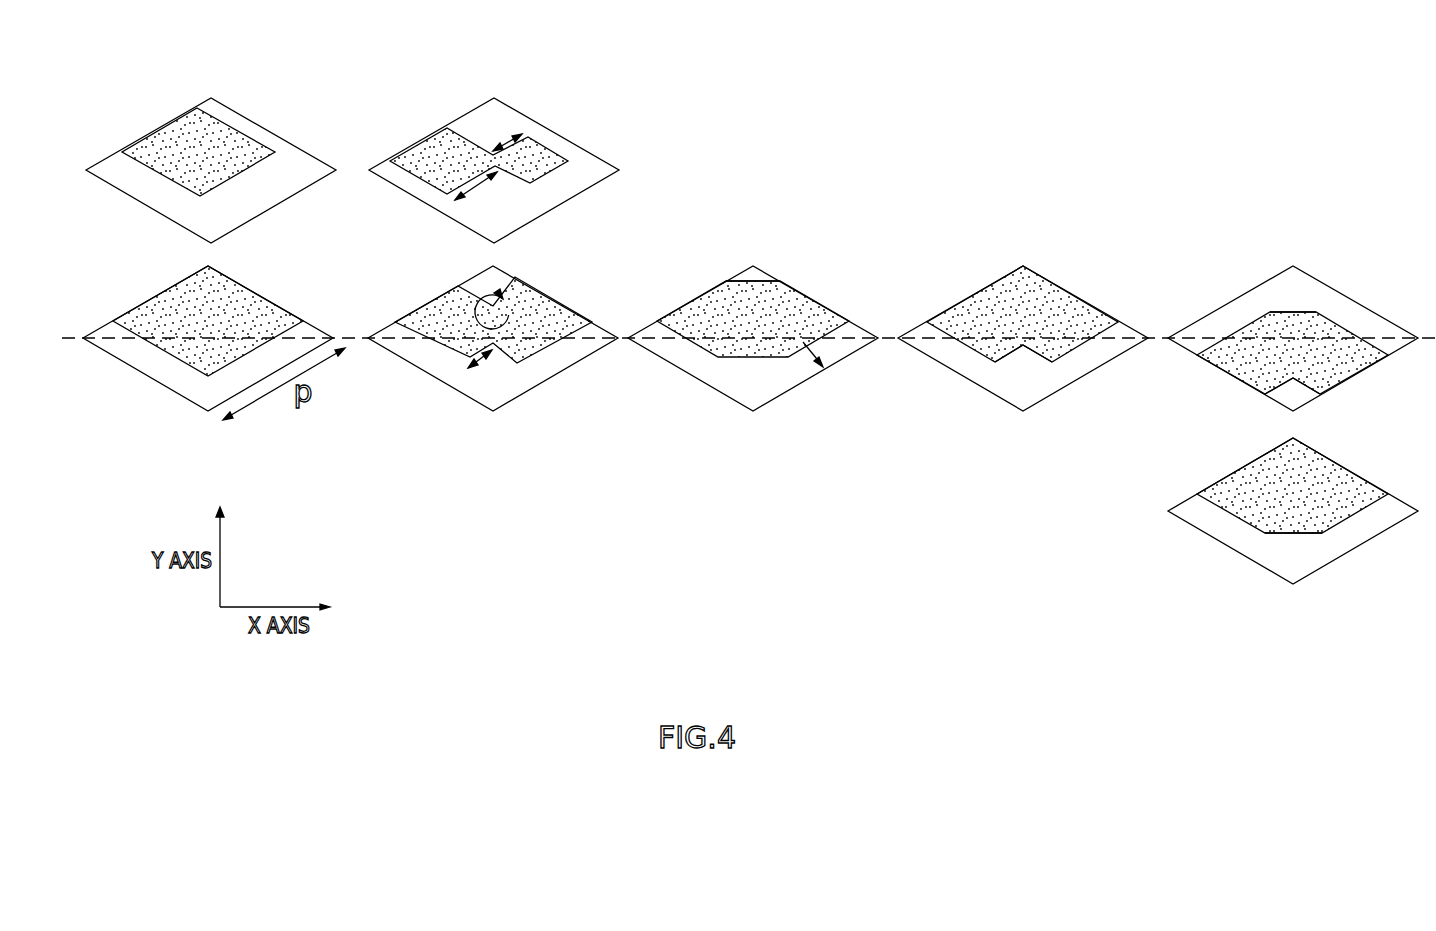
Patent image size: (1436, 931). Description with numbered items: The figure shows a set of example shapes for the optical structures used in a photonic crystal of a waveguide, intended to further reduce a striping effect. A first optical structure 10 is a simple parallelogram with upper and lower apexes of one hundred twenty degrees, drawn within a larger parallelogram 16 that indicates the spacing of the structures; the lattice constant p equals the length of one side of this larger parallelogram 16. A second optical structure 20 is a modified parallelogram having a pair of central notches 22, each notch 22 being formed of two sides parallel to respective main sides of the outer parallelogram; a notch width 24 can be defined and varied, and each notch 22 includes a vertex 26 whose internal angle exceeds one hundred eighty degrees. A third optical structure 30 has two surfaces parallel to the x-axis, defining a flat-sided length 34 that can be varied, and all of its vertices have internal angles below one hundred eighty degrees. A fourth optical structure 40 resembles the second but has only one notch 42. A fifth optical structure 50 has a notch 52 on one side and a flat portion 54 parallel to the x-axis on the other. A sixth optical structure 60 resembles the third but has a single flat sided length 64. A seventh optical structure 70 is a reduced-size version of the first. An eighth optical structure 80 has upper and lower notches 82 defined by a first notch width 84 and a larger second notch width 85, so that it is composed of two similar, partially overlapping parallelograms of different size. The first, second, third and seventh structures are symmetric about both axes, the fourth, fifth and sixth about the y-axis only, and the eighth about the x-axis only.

The first optical structure 10 is at (193, 310).
The larger parallelogram 16 is at (168, 390).
The second optical structure 20 is at (445, 320).
The notch 22 is at (500, 285).
The notch width 24 is at (483, 360).
The vertex 26 is at (512, 311).
The third optical structure 30 is at (727, 308).
The flat-sided length 34 is at (753, 283).
The fourth optical structure 40 is at (1042, 293).
The notch 42 is at (1020, 365).
The fifth optical structure 50 is at (1318, 333).
The notch 52 is at (1297, 385).
The flat portion 54 is at (1293, 310).
The sixth optical structure 60 is at (1272, 480).
The flat sided length 64 is at (1293, 537).
The seventh optical structure 70 is at (173, 132).
The eighth optical structure 80 is at (418, 158).
The notches 82 is at (487, 125).
The first notch width 84 is at (477, 186).
The second notch width 85 is at (502, 142).